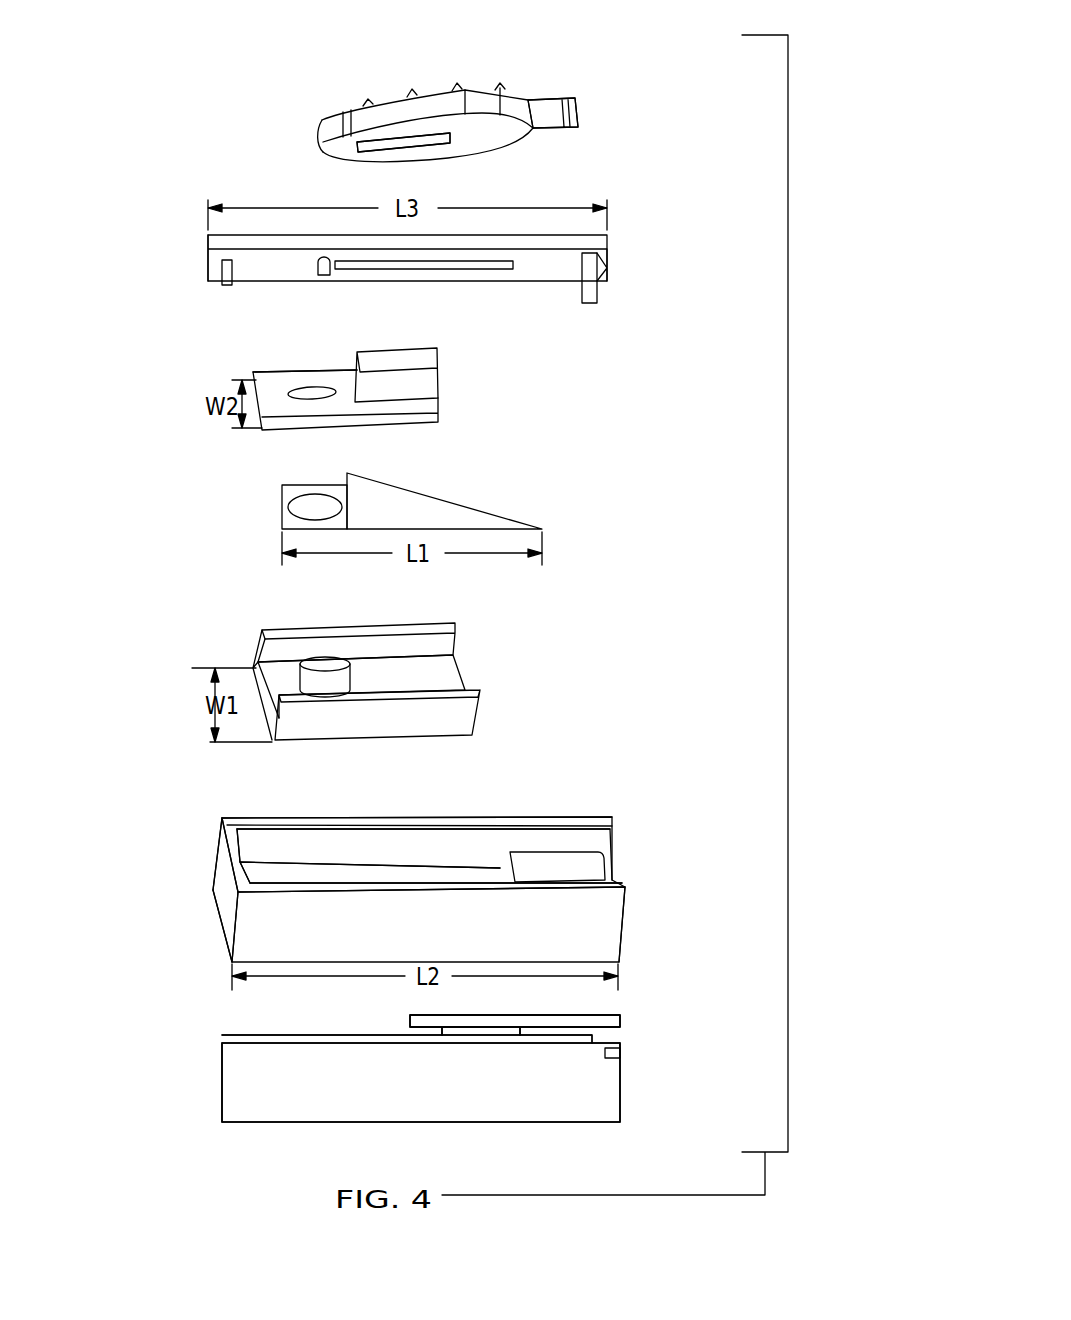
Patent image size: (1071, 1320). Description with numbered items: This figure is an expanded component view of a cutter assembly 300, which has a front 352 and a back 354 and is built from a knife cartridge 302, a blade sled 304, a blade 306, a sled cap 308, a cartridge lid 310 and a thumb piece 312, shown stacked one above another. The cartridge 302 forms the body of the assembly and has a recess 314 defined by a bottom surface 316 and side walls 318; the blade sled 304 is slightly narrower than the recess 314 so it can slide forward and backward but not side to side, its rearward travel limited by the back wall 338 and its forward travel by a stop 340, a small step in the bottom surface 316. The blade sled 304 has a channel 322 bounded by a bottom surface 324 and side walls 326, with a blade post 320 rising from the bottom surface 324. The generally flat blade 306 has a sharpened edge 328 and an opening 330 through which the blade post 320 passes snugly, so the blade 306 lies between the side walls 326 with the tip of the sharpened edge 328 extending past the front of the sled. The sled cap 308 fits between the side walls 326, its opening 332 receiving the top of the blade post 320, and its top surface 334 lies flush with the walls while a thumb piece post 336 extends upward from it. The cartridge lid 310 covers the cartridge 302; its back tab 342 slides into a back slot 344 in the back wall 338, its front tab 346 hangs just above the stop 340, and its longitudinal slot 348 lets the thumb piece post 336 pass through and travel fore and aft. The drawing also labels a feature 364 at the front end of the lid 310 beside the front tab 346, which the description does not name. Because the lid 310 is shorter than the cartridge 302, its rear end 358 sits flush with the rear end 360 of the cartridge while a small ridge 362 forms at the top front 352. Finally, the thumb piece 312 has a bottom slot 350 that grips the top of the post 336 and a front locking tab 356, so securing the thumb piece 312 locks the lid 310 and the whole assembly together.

The cutter assembly 300 is at (398, 1074).
The knife cartridge 302 is at (430, 936).
The blade sled 304 is at (385, 666).
The blade 306 is at (378, 486).
The sled cap 308 is at (424, 738).
The cartridge lid 310 is at (413, 269).
The thumb piece 312 is at (483, 90).
The recess 314 is at (292, 843).
The bottom surface 316 is at (385, 878).
The side walls 318 is at (400, 822).
The blade post 320 is at (332, 657).
The channel 322 is at (284, 668).
The bottom surface 324 is at (470, 667).
The side walls 326 is at (460, 627).
The sharpened edge 328 is at (445, 497).
The opening 330 is at (305, 497).
The opening 332 is at (312, 388).
The top surface 334 is at (262, 372).
The thumb piece post 336 is at (437, 358).
The back wall 338 is at (222, 822).
The stop 340 is at (500, 875).
The back tab 342 is at (222, 270).
The back slot 344 is at (245, 865).
The front tab 346 is at (600, 275).
The longitudinal slot 348 is at (505, 269).
The bottom slot 350 is at (378, 152).
The front 352 is at (622, 1112).
The back 354 is at (222, 1070).
The front locking tab 356 is at (578, 112).
The rear end 358 is at (208, 252).
The rear end 360 is at (225, 905).
The ridge 362 is at (620, 1052).
The bevel 364 is at (607, 262).